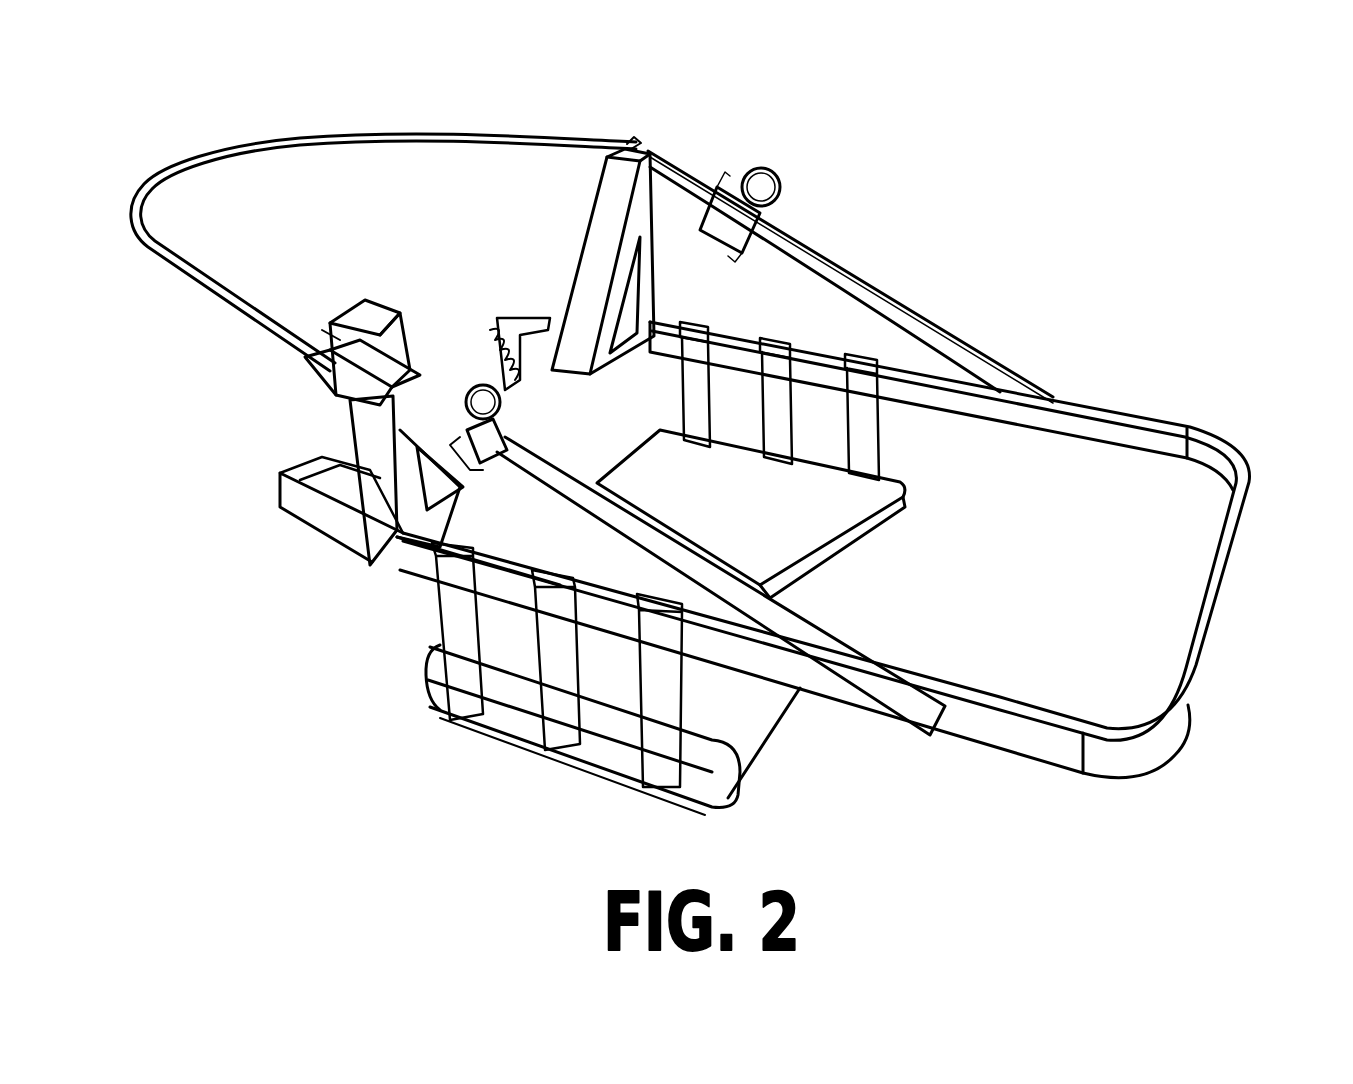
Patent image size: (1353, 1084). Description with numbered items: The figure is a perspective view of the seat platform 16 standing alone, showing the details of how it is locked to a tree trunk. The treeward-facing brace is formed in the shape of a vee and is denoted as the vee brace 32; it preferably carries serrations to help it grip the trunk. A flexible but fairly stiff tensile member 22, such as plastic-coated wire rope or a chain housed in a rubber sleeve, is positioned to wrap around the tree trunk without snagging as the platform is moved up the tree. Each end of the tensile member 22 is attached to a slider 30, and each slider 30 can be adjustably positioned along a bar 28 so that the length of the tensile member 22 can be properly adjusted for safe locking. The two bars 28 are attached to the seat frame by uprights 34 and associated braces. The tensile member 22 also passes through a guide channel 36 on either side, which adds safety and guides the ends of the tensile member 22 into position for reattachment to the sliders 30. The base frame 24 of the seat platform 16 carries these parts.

The seat platform 16 is at (323, 706).
The tensile member 22 is at (368, 140).
The base frame 24 is at (1112, 425).
The bar 28 is at (913, 310).
The slider 30 is at (772, 211).
The vee brace 32 is at (498, 317).
The upright 34 is at (373, 493).
The guide channel 36 is at (330, 378).